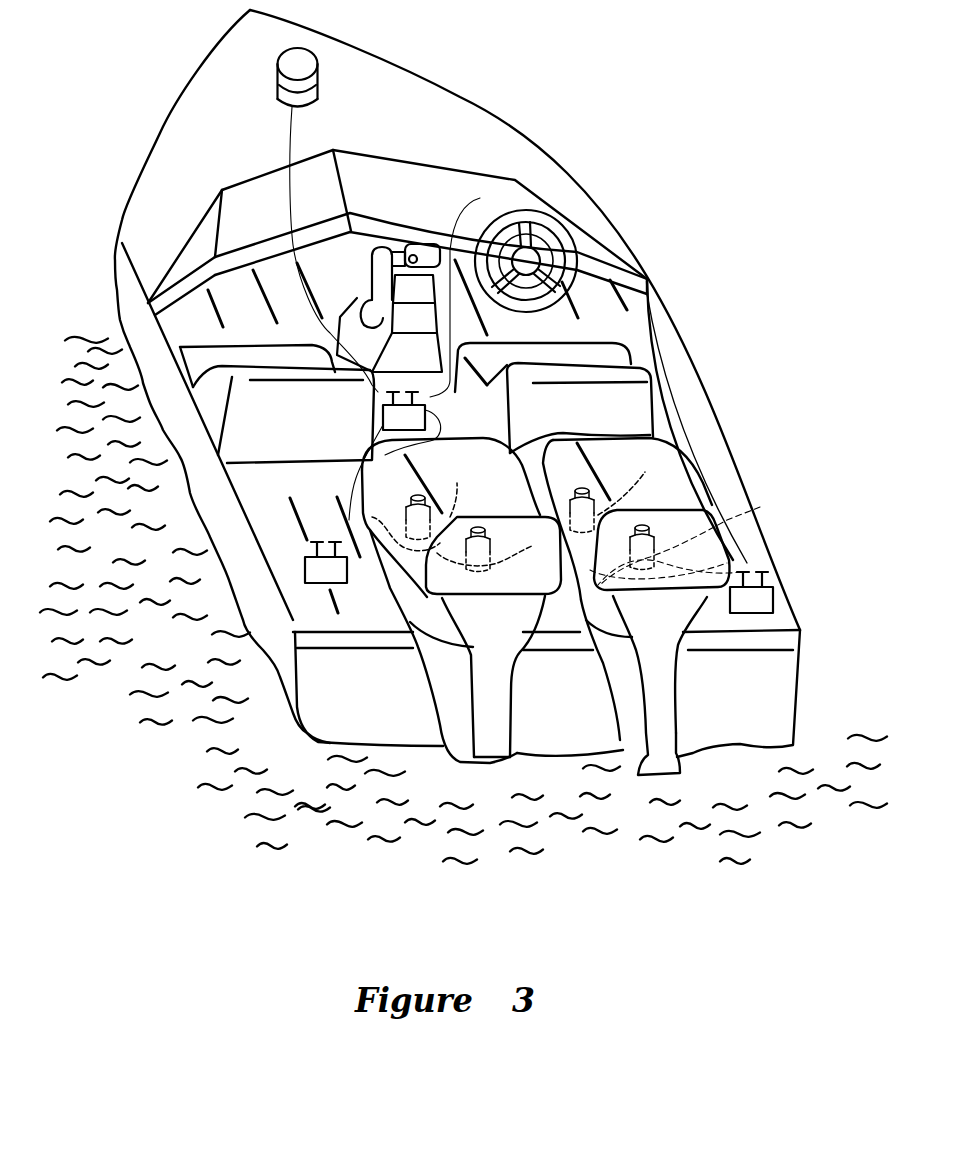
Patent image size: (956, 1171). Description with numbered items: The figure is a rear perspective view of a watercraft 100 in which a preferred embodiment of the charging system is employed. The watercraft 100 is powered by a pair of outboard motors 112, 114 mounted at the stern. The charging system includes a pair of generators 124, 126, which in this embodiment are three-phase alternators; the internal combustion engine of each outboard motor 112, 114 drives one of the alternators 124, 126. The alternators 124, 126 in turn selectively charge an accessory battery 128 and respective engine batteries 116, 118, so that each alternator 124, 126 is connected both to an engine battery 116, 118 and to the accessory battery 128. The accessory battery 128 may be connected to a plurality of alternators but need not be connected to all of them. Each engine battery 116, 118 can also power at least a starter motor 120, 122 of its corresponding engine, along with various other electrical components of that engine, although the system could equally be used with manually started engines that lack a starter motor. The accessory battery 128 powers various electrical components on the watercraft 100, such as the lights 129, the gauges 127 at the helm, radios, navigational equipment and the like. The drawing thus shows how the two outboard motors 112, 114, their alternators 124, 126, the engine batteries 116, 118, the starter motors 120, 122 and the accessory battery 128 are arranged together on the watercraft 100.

The watercraft 100 is at (448, 105).
The outboard motor 112 is at (453, 733).
The outboard motor 114 is at (637, 743).
The engine battery 116 is at (323, 567).
The engine battery 118 is at (763, 602).
The starter motor 120 is at (451, 517).
The starter motor 122 is at (636, 519).
The generator 124 is at (493, 555).
The generator 126 is at (760, 507).
The gauges 127 is at (460, 211).
The accessory battery 128 is at (383, 414).
The lights 129 is at (277, 72).